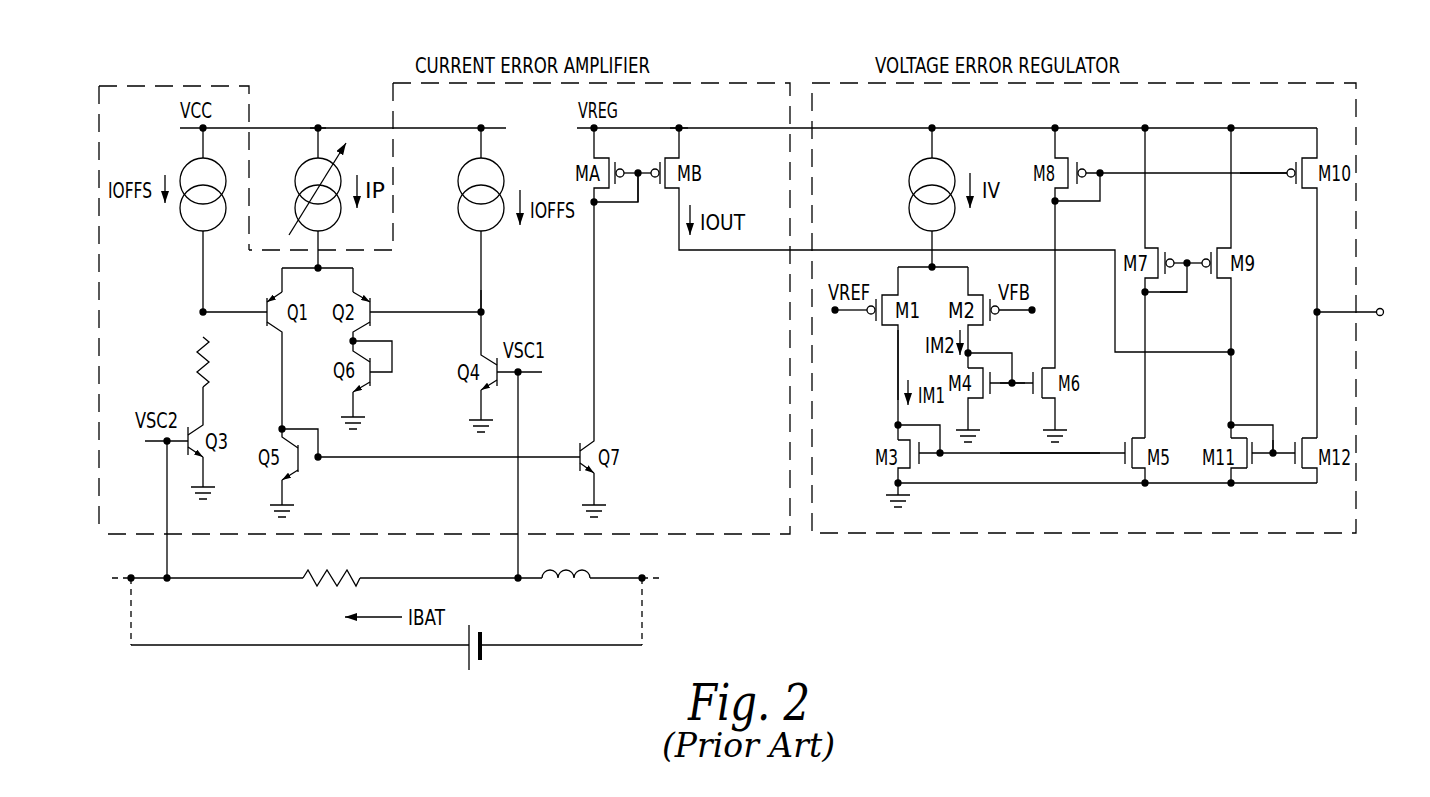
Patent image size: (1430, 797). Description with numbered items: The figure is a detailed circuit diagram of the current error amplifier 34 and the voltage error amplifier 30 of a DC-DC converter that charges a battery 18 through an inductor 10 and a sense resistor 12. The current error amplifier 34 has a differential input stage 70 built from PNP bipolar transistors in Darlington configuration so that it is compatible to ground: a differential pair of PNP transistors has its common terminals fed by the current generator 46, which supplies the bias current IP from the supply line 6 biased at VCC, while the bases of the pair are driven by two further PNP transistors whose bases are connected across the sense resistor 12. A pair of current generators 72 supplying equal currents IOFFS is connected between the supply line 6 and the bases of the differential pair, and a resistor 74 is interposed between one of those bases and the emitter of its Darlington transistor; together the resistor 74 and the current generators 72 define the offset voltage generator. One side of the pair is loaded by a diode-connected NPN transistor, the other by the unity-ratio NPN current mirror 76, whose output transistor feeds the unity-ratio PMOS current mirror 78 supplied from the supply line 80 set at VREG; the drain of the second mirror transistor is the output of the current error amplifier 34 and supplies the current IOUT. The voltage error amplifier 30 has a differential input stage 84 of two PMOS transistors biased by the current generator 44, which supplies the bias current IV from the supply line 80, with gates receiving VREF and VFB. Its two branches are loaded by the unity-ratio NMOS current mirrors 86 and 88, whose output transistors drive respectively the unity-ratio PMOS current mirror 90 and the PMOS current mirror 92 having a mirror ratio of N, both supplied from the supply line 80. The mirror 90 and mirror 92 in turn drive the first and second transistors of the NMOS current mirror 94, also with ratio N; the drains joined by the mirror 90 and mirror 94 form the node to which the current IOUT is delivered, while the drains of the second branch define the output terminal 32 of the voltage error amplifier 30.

The supply line 6 is at (318, 128).
The inductor 10 is at (575, 570).
The sense resistor 12 is at (350, 575).
The battery 18 is at (496, 656).
The voltage error amplifier 30 is at (1167, 83).
The output terminal 32 is at (1378, 308).
The current error amplifier 34 is at (157, 86).
The current generator 44 is at (922, 165).
The current generator 46 is at (303, 166).
The differential input stage 70 is at (497, 290).
The current generators 72 is at (192, 165).
The resistor 74 is at (200, 348).
The current mirror 76 is at (318, 464).
The current mirror 78 is at (646, 208).
The supply line 80 is at (679, 128).
The differential input stage 84 is at (886, 361).
The current mirror 86 is at (1050, 456).
The current mirror 88 is at (1013, 396).
The current mirror 90 is at (1196, 282).
The current mirror 92 is at (1277, 188).
The current mirror 94 is at (1283, 440).